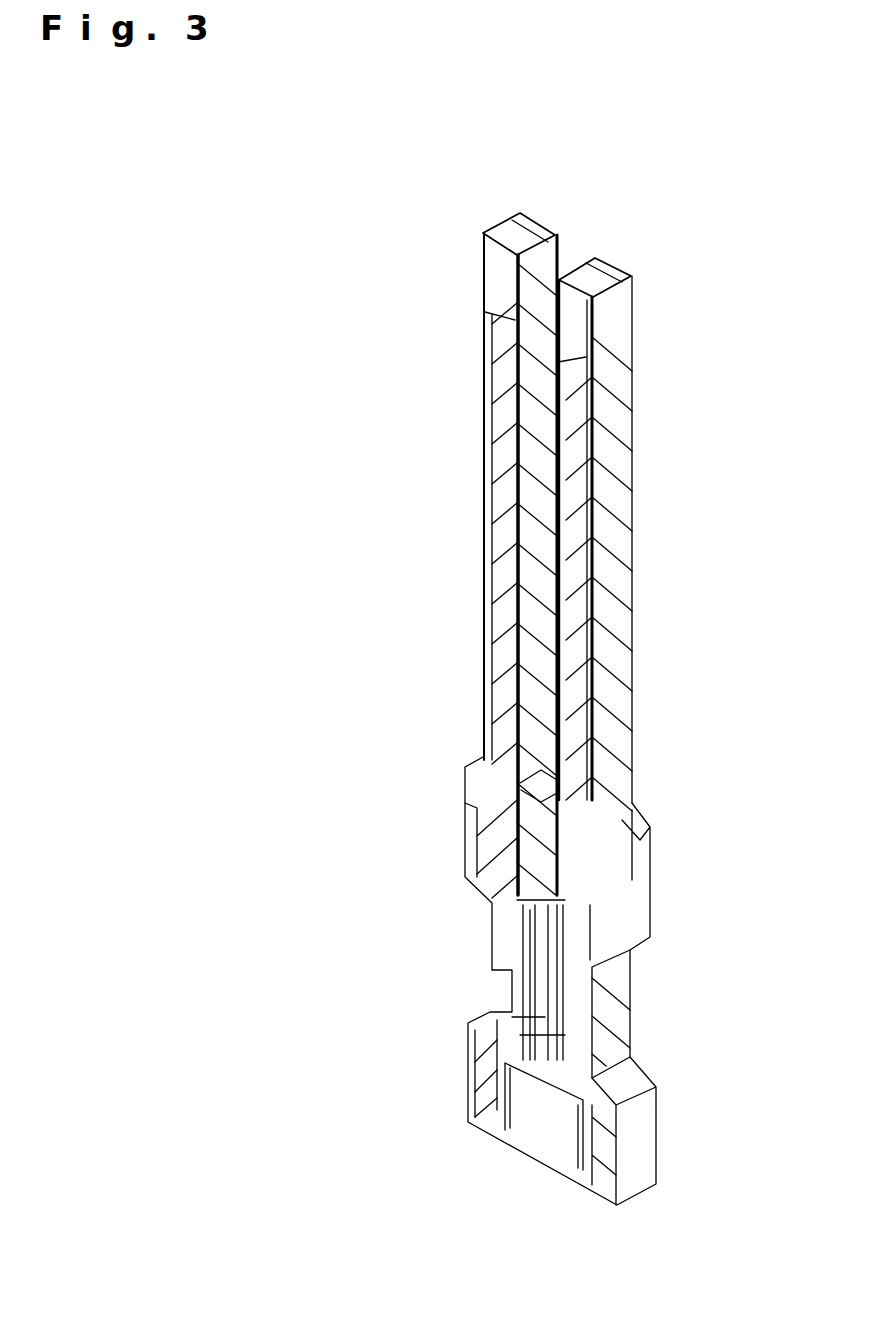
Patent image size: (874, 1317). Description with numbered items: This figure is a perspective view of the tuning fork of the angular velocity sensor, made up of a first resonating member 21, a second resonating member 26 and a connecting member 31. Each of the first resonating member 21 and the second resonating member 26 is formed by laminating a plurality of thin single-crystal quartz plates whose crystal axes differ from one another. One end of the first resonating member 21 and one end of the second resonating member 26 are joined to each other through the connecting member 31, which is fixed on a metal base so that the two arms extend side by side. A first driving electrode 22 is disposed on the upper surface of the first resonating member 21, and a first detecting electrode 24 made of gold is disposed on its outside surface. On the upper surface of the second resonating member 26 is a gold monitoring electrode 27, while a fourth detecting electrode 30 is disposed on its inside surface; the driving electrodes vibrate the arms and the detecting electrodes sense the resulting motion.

The first resonating member 21 is at (580, 315).
The first driving electrode 22 is at (580, 440).
The first detecting electrode 24 is at (620, 540).
The second resonating member 26 is at (494, 283).
The monitoring electrode 27 is at (495, 412).
The fourth detecting electrode 30 is at (528, 492).
The connecting member 31 is at (525, 810).